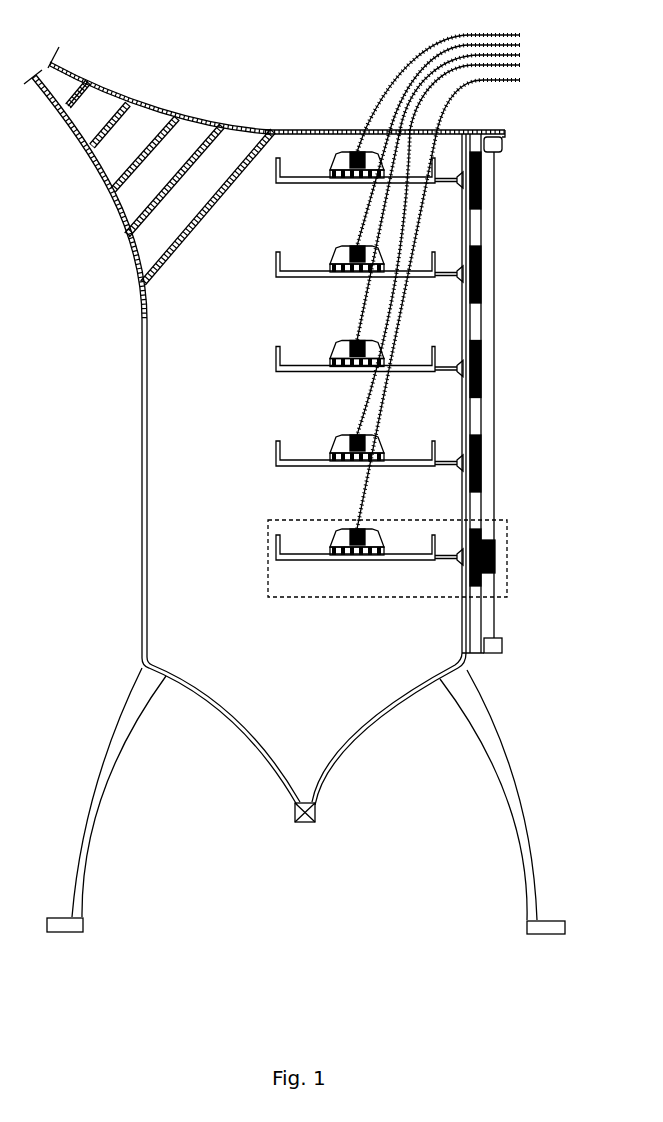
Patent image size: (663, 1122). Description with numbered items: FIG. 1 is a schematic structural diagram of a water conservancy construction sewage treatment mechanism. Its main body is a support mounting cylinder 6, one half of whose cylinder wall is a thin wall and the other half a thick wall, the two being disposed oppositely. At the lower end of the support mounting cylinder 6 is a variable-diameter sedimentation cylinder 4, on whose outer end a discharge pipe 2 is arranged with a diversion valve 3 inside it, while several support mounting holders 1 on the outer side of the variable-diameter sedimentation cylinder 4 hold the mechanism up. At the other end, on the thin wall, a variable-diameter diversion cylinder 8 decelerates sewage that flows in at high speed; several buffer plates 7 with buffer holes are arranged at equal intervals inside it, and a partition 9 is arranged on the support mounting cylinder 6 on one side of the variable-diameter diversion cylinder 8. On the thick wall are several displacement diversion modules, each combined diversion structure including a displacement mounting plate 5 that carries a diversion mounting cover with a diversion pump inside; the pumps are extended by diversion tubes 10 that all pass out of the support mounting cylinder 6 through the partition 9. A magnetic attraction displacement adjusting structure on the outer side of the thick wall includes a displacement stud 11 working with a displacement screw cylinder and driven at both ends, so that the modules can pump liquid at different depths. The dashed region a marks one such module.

The support mounting holder 1 is at (105, 793).
The discharge pipe 2 is at (293, 820).
The diversion valve 3 is at (313, 822).
The variable-diameter sedimentation cylinder 4 is at (360, 735).
The displacement mounting plate 5 is at (280, 467).
The support mounting cylinder 6 is at (140, 412).
The buffer plate 7 is at (190, 160).
The variable-diameter diversion cylinder 8 is at (197, 118).
The partition 9 is at (333, 128).
The diversion tube 10 is at (388, 103).
The displacement stud 11 is at (495, 397).
The detail region a is at (270, 558).